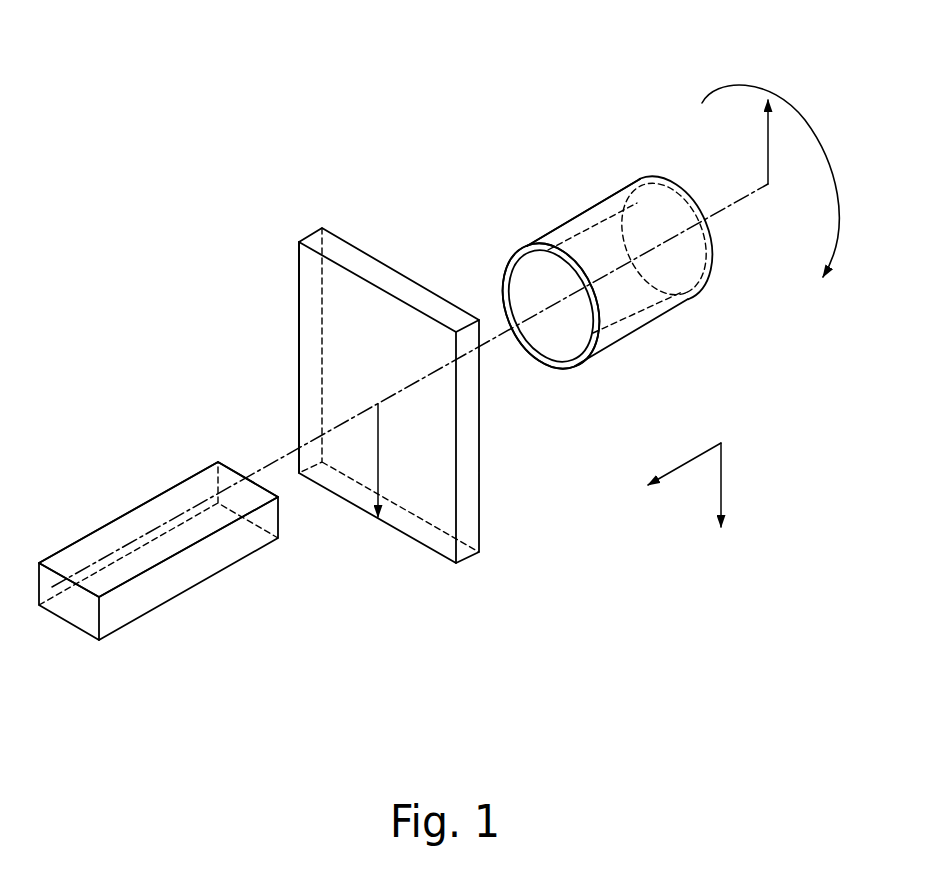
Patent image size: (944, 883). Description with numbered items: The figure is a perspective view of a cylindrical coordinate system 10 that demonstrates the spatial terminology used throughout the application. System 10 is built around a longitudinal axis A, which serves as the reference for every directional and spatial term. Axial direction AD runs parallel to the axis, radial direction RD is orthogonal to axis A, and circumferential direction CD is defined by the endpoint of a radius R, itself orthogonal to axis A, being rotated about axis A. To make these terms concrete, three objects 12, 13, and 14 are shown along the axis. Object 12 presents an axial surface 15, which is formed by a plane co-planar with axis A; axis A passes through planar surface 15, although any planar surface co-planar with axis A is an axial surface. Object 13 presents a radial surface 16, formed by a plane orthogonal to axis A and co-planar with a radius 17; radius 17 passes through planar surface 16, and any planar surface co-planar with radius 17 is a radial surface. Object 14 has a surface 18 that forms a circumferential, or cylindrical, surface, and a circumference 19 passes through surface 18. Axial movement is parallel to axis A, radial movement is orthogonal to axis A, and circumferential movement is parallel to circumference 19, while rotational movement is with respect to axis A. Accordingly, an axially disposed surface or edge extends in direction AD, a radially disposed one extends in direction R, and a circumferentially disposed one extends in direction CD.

The cylindrical coordinate system 10 is at (268, 273).
The object 12 is at (140, 630).
The object 13 is at (480, 553).
The object 14 is at (656, 331).
The axial surface 15 is at (120, 515).
The radial surface 16 is at (310, 357).
The radius 17 is at (378, 465).
The circumferential surface 18 is at (580, 213).
The circumference 19 is at (508, 275).
The longitudinal axis A is at (716, 210).
The radius R is at (766, 155).
The circumferential direction CD is at (790, 108).
The axial direction AD is at (683, 462).
The radial direction RD is at (723, 480).